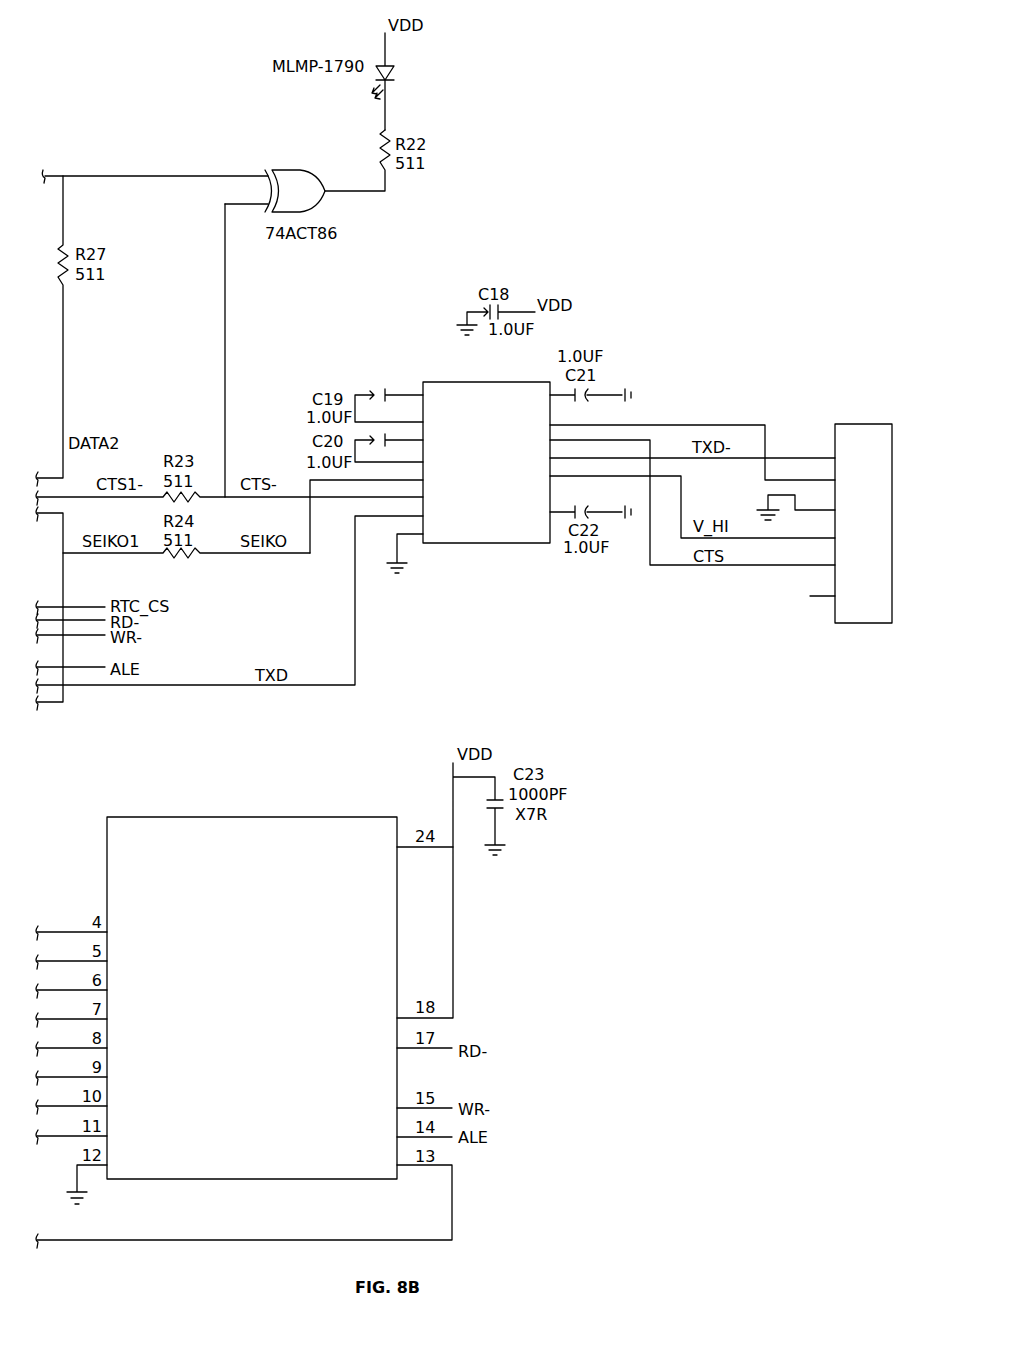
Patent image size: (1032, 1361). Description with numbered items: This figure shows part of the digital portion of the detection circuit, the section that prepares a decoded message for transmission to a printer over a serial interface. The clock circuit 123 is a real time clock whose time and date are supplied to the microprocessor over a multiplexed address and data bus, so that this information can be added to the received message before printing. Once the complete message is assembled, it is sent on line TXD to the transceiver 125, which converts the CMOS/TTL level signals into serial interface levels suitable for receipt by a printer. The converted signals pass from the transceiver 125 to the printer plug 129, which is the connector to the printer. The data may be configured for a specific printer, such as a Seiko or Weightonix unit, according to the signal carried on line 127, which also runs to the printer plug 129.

The clock circuit 123 is at (290, 816).
The RS 232 transceiver 125 is at (505, 545).
The line 127 is at (752, 422).
The printer plug 129 is at (862, 625).